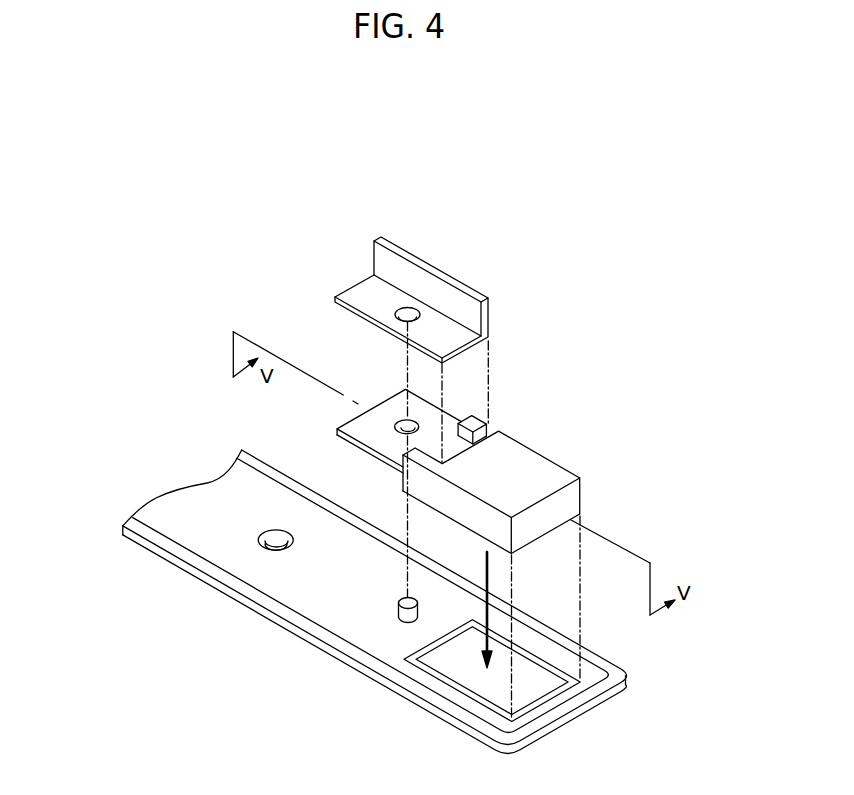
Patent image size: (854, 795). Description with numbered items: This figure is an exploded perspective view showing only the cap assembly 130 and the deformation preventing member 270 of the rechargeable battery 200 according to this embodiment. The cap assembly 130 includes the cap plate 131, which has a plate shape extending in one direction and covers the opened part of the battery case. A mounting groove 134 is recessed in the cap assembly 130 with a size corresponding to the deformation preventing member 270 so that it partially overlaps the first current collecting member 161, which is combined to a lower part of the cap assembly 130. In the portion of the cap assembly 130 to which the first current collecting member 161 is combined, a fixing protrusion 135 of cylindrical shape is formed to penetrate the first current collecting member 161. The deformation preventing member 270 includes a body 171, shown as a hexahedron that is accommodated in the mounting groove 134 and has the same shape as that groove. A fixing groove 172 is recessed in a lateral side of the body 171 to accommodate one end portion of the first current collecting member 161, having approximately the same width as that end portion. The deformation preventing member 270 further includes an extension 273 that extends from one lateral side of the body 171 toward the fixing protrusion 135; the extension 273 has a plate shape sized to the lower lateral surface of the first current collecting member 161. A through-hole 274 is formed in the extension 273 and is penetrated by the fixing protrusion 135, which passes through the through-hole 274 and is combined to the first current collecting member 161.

The rechargeable battery 200 is at (512, 205).
The cap assembly 130 is at (185, 590).
The cap plate 131 is at (317, 607).
The mounting groove 134 is at (530, 682).
The fixing protrusion 135 is at (400, 620).
The first current collecting member 161 is at (360, 285).
The body 171 is at (547, 466).
The fixing groove 172 is at (452, 442).
The deformation preventing member 270 is at (598, 495).
The extension 273 is at (342, 426).
The through-hole 274 is at (403, 420).